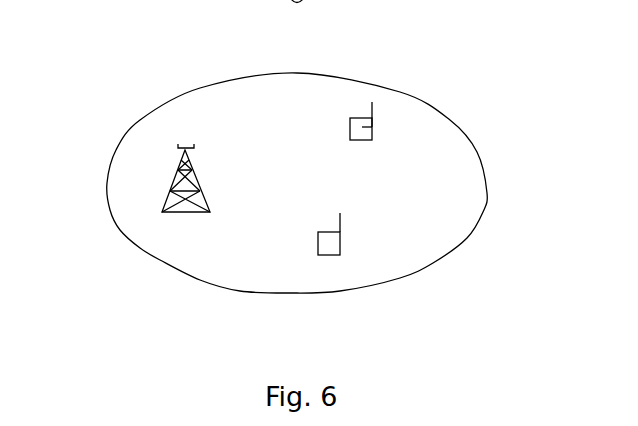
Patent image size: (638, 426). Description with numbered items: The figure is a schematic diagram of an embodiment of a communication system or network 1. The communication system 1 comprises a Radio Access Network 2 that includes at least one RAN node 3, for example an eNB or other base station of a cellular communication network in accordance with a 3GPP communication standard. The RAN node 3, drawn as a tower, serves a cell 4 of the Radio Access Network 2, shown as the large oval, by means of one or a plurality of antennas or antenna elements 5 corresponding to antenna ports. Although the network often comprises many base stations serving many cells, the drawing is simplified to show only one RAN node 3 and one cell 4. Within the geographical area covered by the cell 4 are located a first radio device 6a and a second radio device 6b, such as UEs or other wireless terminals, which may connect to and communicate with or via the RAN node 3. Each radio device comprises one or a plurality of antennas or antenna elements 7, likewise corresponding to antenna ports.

The communication system 1 is at (137, 91).
The Radio Access Network 2 is at (173, 228).
The RAN node 3 is at (165, 203).
The cell 4 is at (273, 282).
The antenna element 5 is at (195, 142).
The first radio device 6a is at (340, 240).
The second radio device 6b is at (372, 128).
The antenna element 7 is at (372, 108).